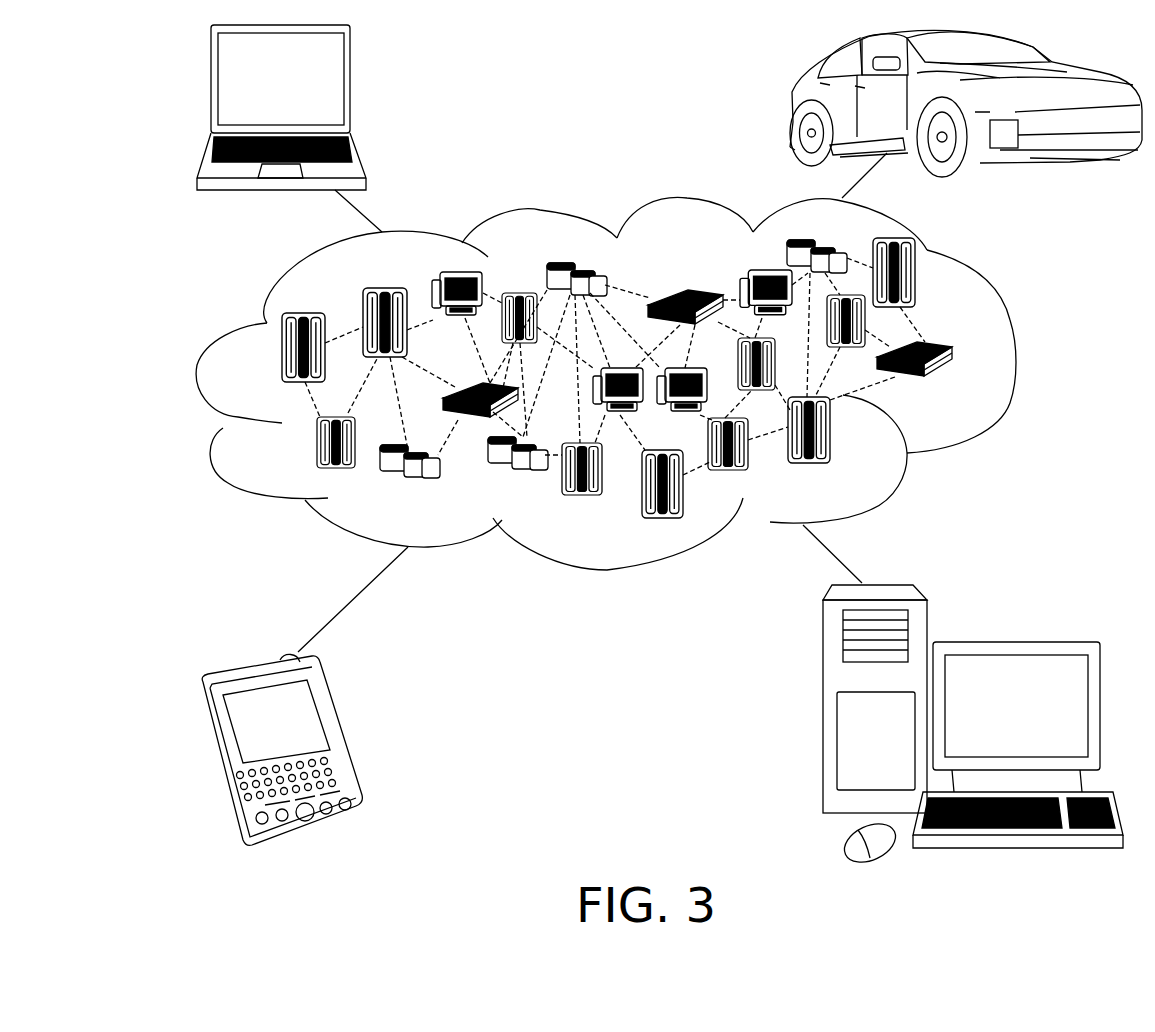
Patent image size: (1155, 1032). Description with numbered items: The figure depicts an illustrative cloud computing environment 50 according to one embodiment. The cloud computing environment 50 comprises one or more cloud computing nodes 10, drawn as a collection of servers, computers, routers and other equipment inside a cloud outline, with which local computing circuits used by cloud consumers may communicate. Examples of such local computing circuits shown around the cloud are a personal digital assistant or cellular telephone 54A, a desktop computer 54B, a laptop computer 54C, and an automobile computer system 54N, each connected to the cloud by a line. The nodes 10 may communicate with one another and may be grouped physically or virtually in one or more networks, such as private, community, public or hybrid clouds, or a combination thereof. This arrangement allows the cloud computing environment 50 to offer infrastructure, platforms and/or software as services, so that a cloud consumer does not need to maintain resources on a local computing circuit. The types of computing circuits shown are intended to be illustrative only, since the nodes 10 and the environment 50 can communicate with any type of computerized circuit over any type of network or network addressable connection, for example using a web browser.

The cloud computing environment 50 is at (1018, 357).
The cloud computing node 10 is at (960, 389).
The personal digital assistant or cellular telephone 54A is at (340, 737).
The desktop computer 54B is at (1015, 642).
The laptop computer 54C is at (352, 88).
The automobile computer system 54N is at (795, 103).